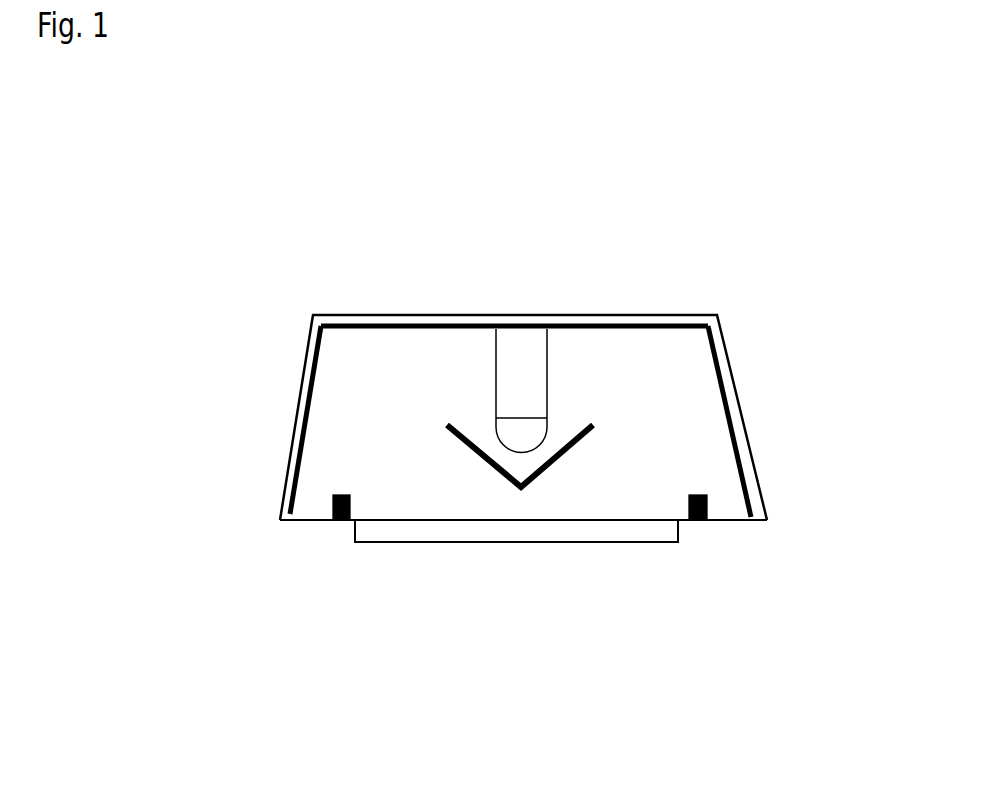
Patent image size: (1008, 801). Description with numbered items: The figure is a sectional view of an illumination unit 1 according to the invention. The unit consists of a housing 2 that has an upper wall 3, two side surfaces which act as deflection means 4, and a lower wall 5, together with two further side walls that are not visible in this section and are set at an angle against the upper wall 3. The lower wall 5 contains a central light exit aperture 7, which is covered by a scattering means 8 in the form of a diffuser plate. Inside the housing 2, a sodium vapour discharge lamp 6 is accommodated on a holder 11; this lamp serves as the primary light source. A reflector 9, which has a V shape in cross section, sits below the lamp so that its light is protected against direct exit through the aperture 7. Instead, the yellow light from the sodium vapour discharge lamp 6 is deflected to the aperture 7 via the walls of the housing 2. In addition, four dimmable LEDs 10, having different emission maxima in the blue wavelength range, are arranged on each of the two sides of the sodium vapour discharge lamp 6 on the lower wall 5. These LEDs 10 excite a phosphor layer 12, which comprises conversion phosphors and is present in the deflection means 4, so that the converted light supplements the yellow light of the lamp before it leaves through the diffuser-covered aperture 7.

The illumination unit 1 is at (813, 220).
The housing 2 is at (262, 398).
The upper wall 3 is at (605, 278).
The deflection means 4 is at (779, 464).
The lower wall 5 is at (298, 549).
The sodium vapour discharge lamp 6 is at (519, 391).
The light exit aperture 7 is at (630, 598).
The scattering means 8 is at (473, 571).
The reflector 9 is at (434, 371).
The dimmable LEDs 10 is at (341, 552).
The holder 11 is at (579, 368).
The phosphor layer 12 is at (324, 291).